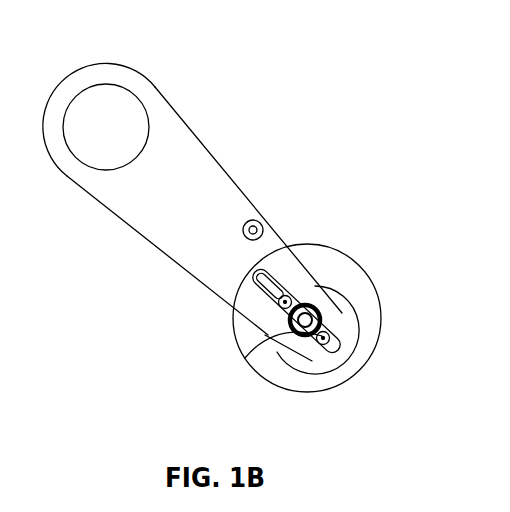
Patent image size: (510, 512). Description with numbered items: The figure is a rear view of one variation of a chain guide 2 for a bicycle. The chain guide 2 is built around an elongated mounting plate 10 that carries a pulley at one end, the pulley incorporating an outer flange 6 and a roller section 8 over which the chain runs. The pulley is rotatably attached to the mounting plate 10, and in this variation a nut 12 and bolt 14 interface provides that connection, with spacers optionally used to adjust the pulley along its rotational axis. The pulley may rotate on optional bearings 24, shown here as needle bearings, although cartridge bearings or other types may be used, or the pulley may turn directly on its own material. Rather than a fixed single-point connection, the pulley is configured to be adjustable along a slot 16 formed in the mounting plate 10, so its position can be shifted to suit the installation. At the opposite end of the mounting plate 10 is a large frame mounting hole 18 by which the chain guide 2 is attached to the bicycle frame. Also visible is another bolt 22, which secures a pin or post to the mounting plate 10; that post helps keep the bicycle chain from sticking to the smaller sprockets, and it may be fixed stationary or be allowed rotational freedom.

The chain guide 2 is at (67, 49).
The outer flange 6 is at (369, 278).
The roller section 8 is at (358, 325).
The mounting plate 10 is at (210, 148).
The nut 12 is at (247, 357).
The bolt 14 is at (302, 337).
The slot 16 is at (263, 270).
The frame mounting hole 18 is at (141, 97).
The bolt 22 is at (263, 227).
The bearings 24 is at (330, 347).